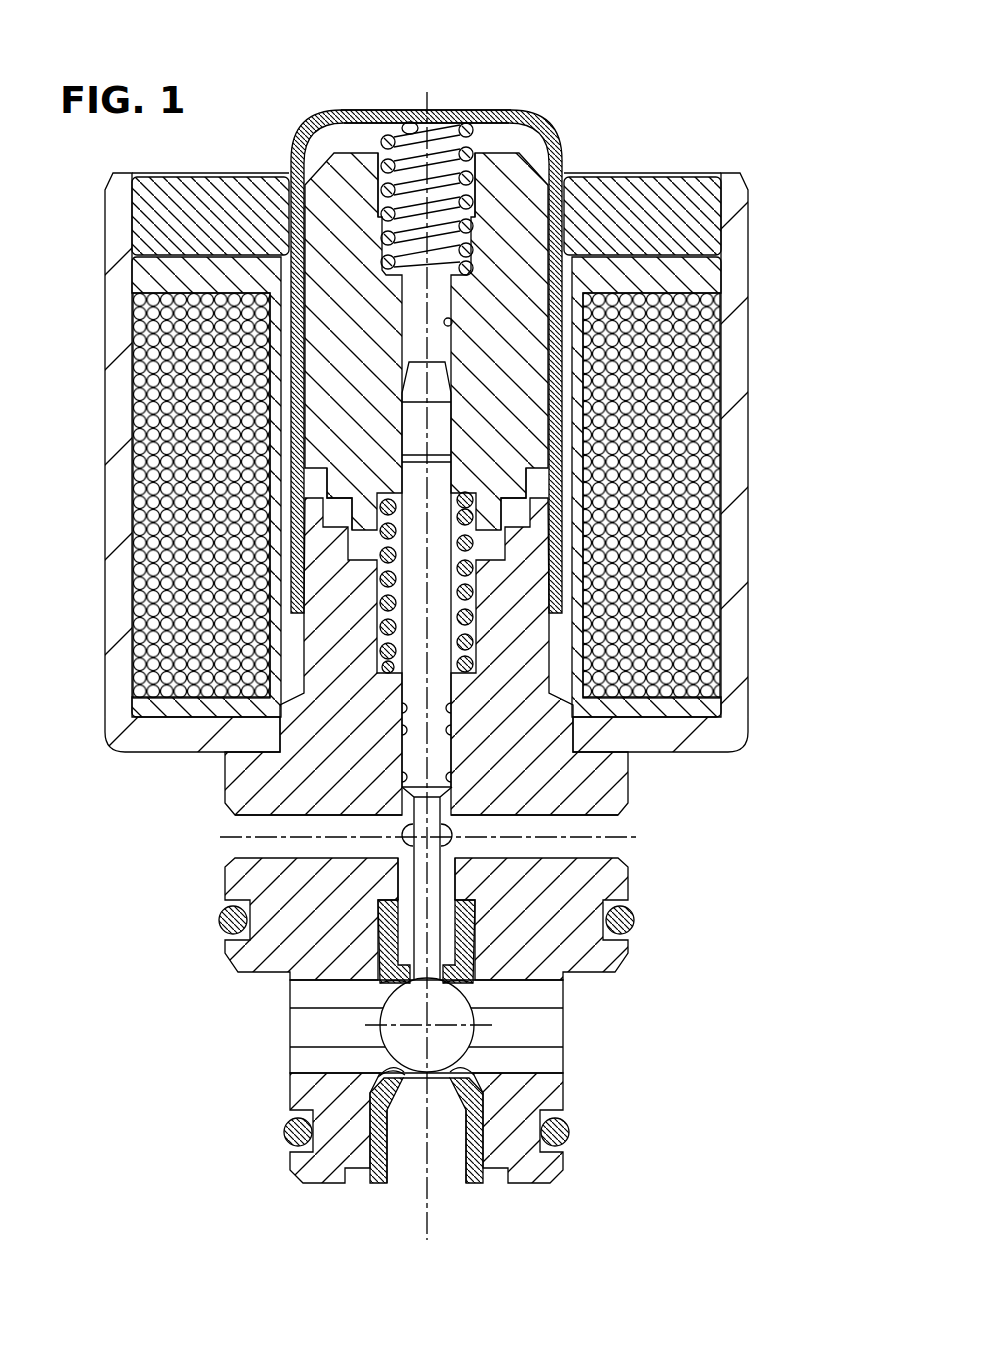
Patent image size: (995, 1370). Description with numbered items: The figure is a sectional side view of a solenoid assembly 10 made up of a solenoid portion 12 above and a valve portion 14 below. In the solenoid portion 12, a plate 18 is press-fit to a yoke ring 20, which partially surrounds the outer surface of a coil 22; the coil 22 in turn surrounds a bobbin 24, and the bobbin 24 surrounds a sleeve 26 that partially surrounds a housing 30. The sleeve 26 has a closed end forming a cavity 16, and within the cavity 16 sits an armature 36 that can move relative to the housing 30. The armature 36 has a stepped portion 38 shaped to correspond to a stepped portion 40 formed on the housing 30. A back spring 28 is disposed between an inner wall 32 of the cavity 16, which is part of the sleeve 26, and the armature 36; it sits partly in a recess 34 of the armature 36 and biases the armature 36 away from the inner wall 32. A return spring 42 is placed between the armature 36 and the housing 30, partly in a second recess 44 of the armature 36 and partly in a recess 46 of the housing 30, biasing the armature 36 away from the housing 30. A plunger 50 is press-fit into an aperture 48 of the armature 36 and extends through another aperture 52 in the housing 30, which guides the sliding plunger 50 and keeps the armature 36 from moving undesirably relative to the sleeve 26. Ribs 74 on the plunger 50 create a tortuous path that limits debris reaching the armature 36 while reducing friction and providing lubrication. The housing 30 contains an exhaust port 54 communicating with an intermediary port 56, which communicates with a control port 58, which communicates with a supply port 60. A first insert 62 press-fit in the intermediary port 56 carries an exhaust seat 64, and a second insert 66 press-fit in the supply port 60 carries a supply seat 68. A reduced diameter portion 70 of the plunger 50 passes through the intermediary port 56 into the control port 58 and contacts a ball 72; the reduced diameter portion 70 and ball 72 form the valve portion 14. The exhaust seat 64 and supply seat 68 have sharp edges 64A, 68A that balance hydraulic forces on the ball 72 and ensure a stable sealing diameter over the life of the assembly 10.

The solenoid assembly 10 is at (160, 1040).
The solenoid portion 12 is at (713, 815).
The valve portion 14 is at (693, 1082).
The cavity 16 is at (495, 140).
The plate 18 is at (693, 192).
The yoke ring 20 is at (732, 393).
The coil 22 is at (673, 543).
The bobbin 24 is at (275, 312).
The sleeve 26 is at (300, 402).
The back spring 28 is at (467, 150).
The housing 30 is at (233, 880).
The inner wall 32 is at (420, 110).
The recess 34 is at (382, 150).
The armature 36 is at (517, 247).
The stepped portion 38 is at (335, 510).
The stepped portion 40 is at (517, 515).
The return spring 42 is at (472, 618).
The second recess 44 is at (473, 530).
The recess 46 is at (383, 567).
The aperture 48 is at (452, 322).
The plunger 50 is at (443, 722).
The aperture 52 is at (405, 709).
The exhaust port 54 is at (585, 855).
The intermediary port 56 is at (448, 882).
The control port 58 is at (548, 1053).
The supply port 60 is at (407, 1153).
The first insert 62 is at (380, 935).
The exhaust seat 64 is at (477, 997).
The sharp edge 64A is at (413, 990).
The second insert 66 is at (473, 1177).
The supply seat 68 is at (470, 1077).
The sharp edge 68A is at (380, 1083).
The reduced diameter portion 70 is at (420, 880).
The ball 72 is at (400, 1030).
The ribs 74 is at (450, 777).